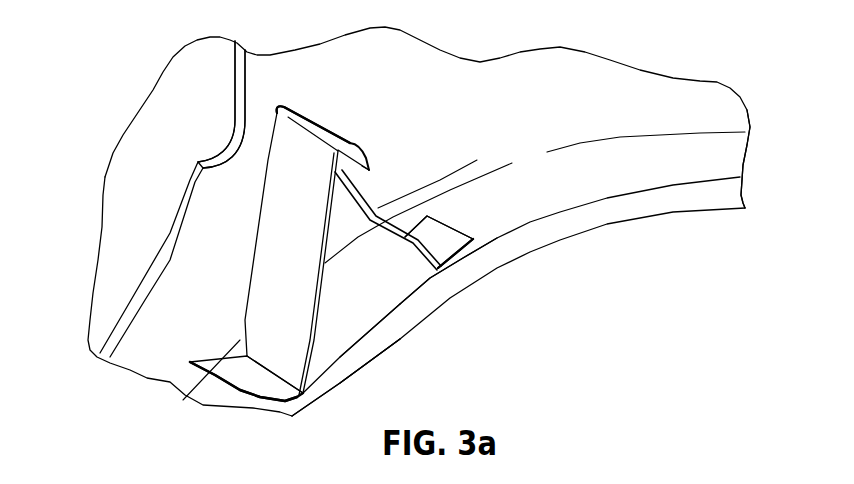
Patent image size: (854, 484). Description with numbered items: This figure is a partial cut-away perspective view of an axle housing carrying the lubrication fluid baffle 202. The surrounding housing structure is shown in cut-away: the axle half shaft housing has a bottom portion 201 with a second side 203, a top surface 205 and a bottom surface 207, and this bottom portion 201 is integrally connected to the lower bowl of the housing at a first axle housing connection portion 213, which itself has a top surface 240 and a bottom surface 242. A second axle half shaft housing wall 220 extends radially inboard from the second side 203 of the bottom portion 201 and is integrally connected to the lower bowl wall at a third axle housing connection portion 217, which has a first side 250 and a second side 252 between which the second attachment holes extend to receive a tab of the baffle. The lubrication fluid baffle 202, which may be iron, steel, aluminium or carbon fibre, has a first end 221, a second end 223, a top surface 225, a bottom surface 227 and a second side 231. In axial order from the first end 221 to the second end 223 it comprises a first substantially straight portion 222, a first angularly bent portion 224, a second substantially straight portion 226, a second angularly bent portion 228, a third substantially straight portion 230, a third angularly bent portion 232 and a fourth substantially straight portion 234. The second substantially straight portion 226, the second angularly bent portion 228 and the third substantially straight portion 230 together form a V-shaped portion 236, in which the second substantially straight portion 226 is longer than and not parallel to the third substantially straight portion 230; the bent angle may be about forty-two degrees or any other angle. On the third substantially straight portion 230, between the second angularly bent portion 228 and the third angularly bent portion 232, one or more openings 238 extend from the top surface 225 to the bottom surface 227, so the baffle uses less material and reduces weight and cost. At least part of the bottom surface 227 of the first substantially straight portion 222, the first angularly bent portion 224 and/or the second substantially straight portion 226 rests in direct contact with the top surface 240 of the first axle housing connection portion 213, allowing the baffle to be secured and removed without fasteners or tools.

The bottom portion 201 is at (730, 163).
The lubrication fluid baffle 202 is at (312, 212).
The second side 203 is at (742, 145).
The top surface 205 is at (590, 197).
The bottom surface 207 is at (606, 225).
The first axle housing connection portion 213 is at (347, 329).
The third axle housing connection portion 217 is at (248, 95).
The second axle half shaft housing wall 220 is at (717, 100).
The first end 221 is at (170, 381).
The first substantially straight portion 222 is at (240, 382).
The second end 223 is at (477, 229).
The first angularly bent portion 224 is at (247, 361).
The top surface 225 is at (355, 143).
The second substantially straight portion 226 is at (266, 222).
The bottom surface 227 is at (368, 238).
The second angularly bent portion 228 is at (293, 113).
The third substantially straight portion 230 is at (362, 152).
The second side 231 is at (265, 184).
The third angularly bent portion 232 is at (435, 268).
The fourth substantially straight portion 234 is at (440, 266).
The V-shaped portion 236 is at (338, 263).
The openings 238 is at (354, 164).
The top surface 240 is at (387, 314).
The bottom surface 242 is at (443, 300).
The first side 250 is at (235, 70).
The second side 252 is at (247, 70).